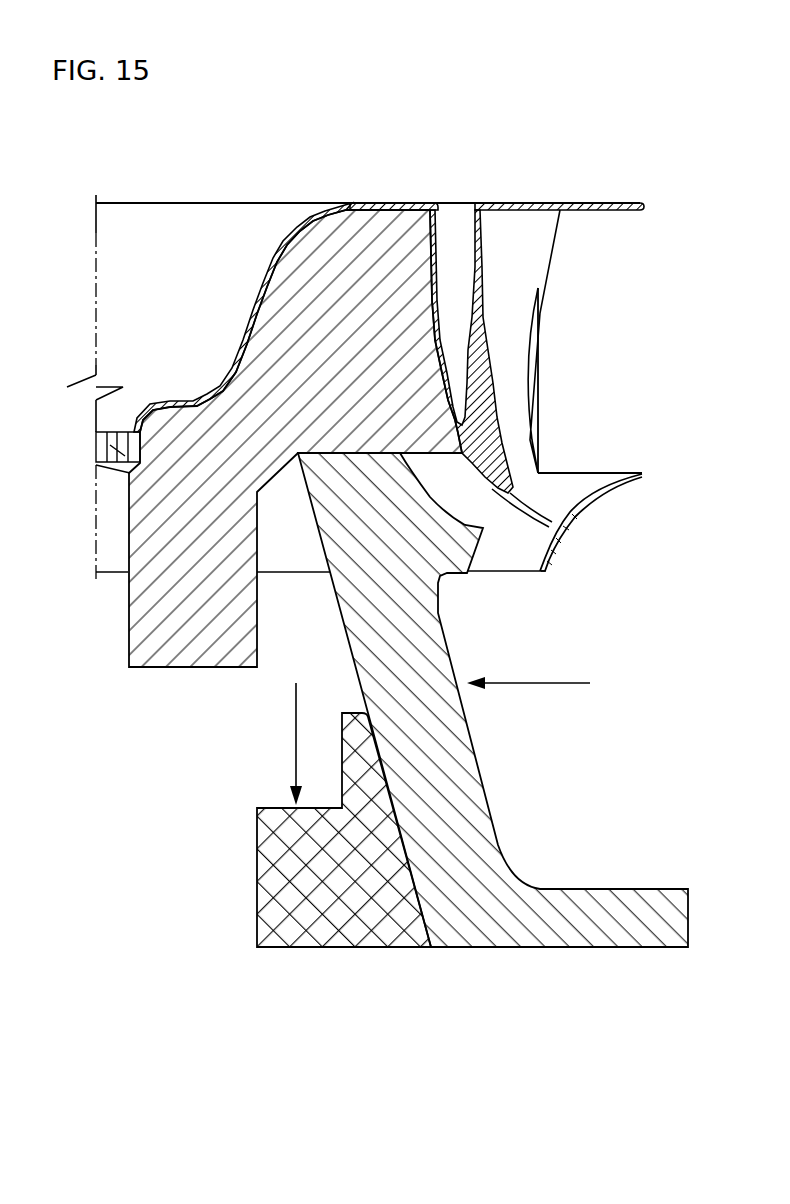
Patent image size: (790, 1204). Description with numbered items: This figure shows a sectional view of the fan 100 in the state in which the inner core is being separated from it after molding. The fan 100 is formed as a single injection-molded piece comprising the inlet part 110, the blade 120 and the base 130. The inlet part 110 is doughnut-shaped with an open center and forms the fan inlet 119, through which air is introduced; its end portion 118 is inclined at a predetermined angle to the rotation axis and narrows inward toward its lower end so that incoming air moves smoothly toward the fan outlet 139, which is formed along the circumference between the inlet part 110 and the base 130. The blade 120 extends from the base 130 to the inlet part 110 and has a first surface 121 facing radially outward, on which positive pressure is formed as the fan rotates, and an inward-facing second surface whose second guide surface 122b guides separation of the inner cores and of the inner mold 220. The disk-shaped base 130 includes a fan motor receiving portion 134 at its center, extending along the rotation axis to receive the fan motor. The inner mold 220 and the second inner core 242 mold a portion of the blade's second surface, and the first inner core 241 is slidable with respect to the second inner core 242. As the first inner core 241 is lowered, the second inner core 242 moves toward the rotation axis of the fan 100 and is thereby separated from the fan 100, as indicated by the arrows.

The fan 100 is at (565, 163).
The inlet part 110 is at (602, 508).
The end portion 118 is at (541, 572).
The fan inlet 119 is at (488, 571).
The blade 120 is at (550, 365).
The first surface 121 is at (527, 267).
The second guide surface 122b is at (512, 511).
The base 130 is at (382, 200).
The fan motor receiving portion 134 is at (264, 270).
The fan outlet 139 is at (623, 209).
The inner mold 220 is at (328, 247).
The first inner core 241 is at (337, 922).
The second inner core 242 is at (512, 922).